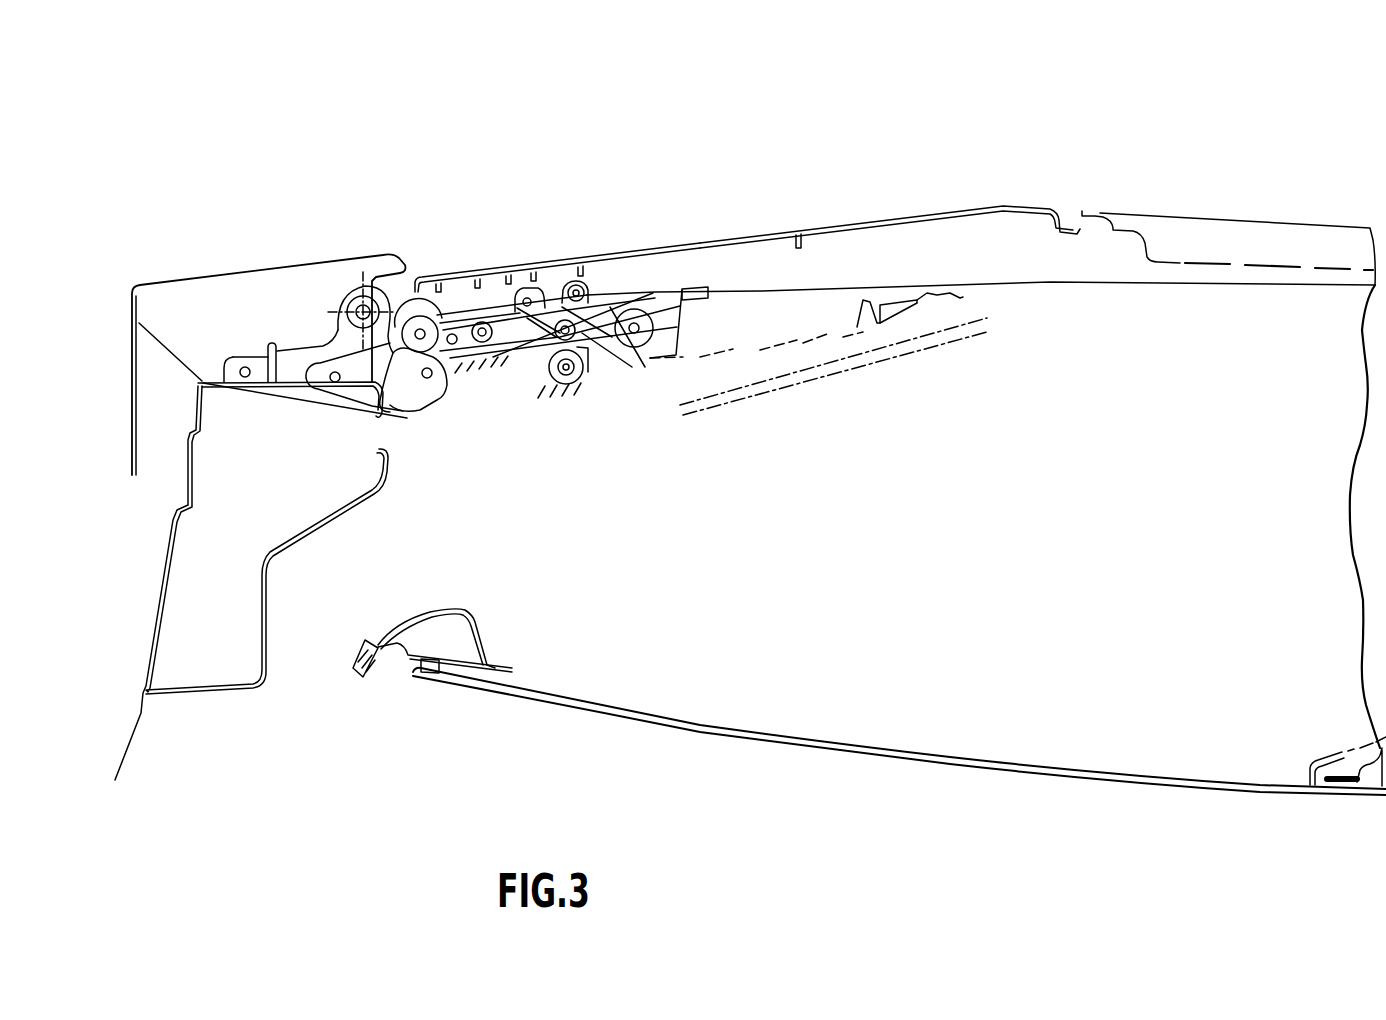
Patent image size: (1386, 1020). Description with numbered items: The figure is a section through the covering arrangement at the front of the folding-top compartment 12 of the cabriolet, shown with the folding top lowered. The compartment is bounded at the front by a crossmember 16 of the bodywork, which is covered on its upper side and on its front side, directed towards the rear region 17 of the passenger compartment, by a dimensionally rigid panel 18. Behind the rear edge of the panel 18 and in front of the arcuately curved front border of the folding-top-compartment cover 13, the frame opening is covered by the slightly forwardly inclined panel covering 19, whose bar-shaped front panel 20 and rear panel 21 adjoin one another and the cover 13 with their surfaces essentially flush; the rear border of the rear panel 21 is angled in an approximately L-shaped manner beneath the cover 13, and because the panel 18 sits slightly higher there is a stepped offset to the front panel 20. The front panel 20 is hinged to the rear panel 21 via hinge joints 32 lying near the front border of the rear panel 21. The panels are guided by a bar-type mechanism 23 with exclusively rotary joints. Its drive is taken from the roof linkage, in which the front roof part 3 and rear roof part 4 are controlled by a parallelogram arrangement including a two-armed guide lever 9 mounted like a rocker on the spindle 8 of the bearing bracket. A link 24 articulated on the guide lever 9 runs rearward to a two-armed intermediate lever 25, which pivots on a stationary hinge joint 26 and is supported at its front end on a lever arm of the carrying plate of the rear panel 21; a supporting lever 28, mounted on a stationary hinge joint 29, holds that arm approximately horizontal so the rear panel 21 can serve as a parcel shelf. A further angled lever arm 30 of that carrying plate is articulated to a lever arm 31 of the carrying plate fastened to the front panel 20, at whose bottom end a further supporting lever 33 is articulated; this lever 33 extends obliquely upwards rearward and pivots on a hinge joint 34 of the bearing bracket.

The front roof part 3 is at (940, 335).
The rear roof part 4 is at (495, 665).
The spindle 8 is at (356, 305).
The guide lever 9 is at (293, 392).
The folding-top compartment 12 is at (970, 623).
The folding-top-compartment cover 13 is at (1203, 215).
The crossmember 16 is at (155, 608).
The rear region of the passenger compartment 17 is at (129, 532).
The panel 18 is at (252, 297).
The panel covering 19 is at (570, 198).
The front panel 20 is at (458, 275).
The rear panel 21 is at (845, 225).
The bar-type mechanism 23 is at (558, 413).
The link 24 is at (390, 373).
The intermediate lever 25 is at (525, 360).
The stationary hinge joint 26 is at (480, 318).
The supporting lever 28 is at (613, 349).
The stationary hinge joint 29 is at (580, 360).
The angled lever arm 30 is at (588, 290).
The lever arm 31 is at (588, 300).
The hinge joint 32 is at (580, 282).
The supporting lever 33 is at (538, 322).
The hinge joint 34 is at (560, 322).